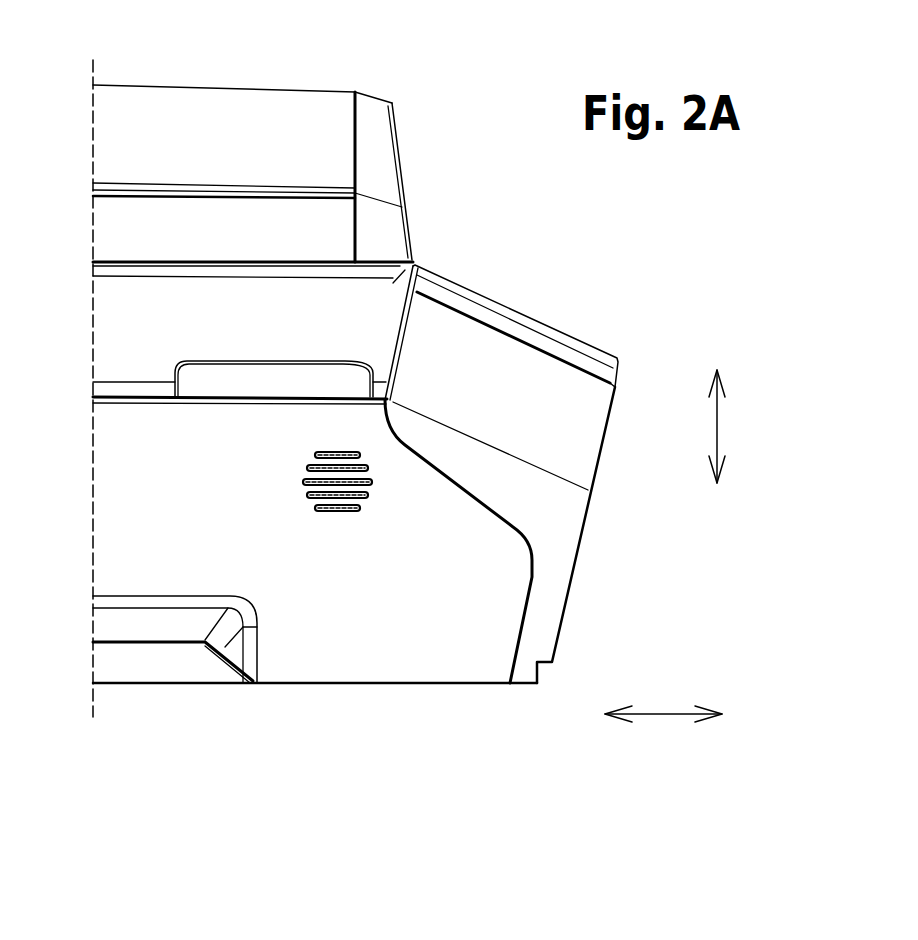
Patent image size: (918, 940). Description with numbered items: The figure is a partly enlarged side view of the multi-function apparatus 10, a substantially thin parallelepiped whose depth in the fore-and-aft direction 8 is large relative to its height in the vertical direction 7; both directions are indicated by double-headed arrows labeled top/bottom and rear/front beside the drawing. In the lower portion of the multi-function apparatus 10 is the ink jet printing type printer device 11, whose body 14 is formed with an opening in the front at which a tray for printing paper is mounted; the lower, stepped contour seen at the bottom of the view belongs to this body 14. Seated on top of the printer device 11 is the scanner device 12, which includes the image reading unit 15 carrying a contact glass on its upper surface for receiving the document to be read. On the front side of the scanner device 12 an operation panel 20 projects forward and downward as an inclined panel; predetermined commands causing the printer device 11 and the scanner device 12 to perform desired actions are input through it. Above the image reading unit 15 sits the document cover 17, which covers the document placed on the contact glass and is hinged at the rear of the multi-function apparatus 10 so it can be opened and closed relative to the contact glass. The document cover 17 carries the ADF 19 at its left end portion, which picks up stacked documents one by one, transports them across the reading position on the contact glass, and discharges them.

The multi-function apparatus 10 is at (135, 717).
The printer device 11 is at (354, 557).
The body 14 is at (385, 652).
The scanner device 12 is at (324, 293).
The image reading unit 15 is at (413, 260).
The document cover 17 is at (418, 145).
The ADF (Auto Document Feeder) 19 is at (198, 85).
The operation panel 20 is at (520, 307).
The vertical direction 7 is at (717, 425).
The fore-and-aft direction 8 is at (662, 716).